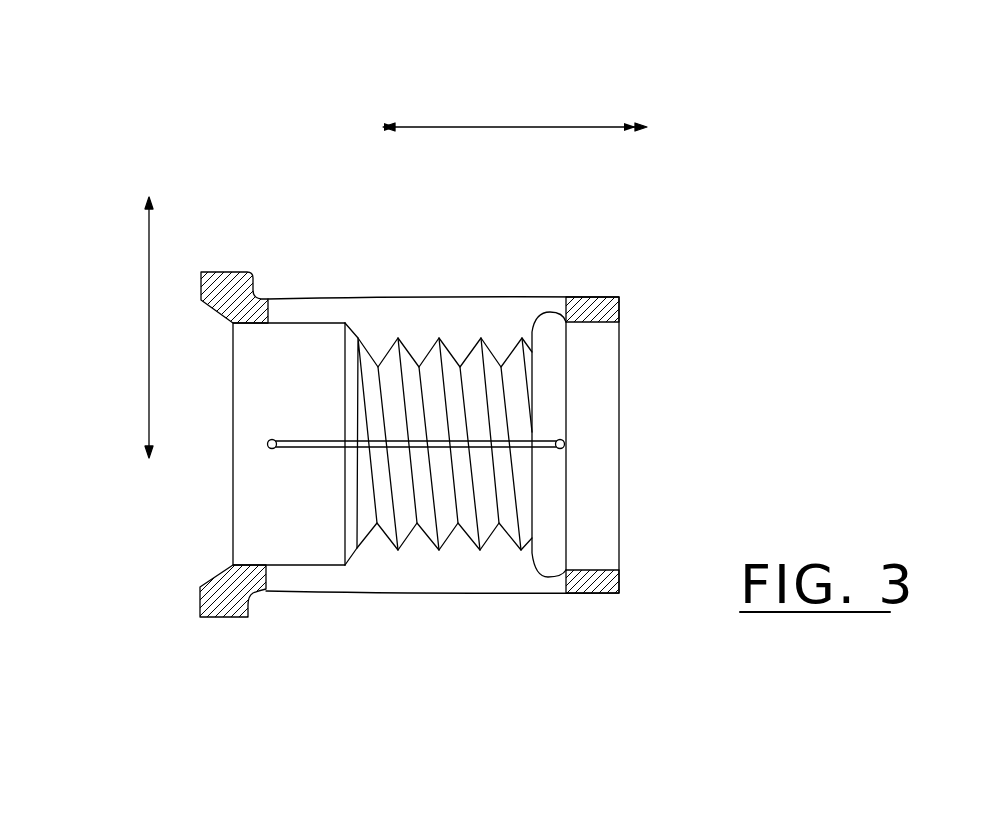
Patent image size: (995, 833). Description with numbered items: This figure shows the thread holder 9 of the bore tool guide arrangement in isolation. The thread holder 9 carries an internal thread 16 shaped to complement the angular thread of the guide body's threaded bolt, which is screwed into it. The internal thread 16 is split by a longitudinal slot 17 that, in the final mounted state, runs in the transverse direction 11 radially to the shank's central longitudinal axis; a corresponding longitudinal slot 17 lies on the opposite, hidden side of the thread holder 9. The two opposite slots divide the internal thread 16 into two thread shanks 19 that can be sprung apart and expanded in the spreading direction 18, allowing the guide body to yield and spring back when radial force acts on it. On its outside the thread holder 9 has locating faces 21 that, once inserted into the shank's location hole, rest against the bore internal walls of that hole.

The thread holder 9 is at (409, 604).
The transverse direction 11 is at (514, 127).
The internal thread 16 is at (441, 325).
The longitudinal slot 17 is at (298, 448).
The spreading direction 18 is at (149, 325).
The thread shank 19 is at (524, 396).
The locating face 21 is at (231, 290).